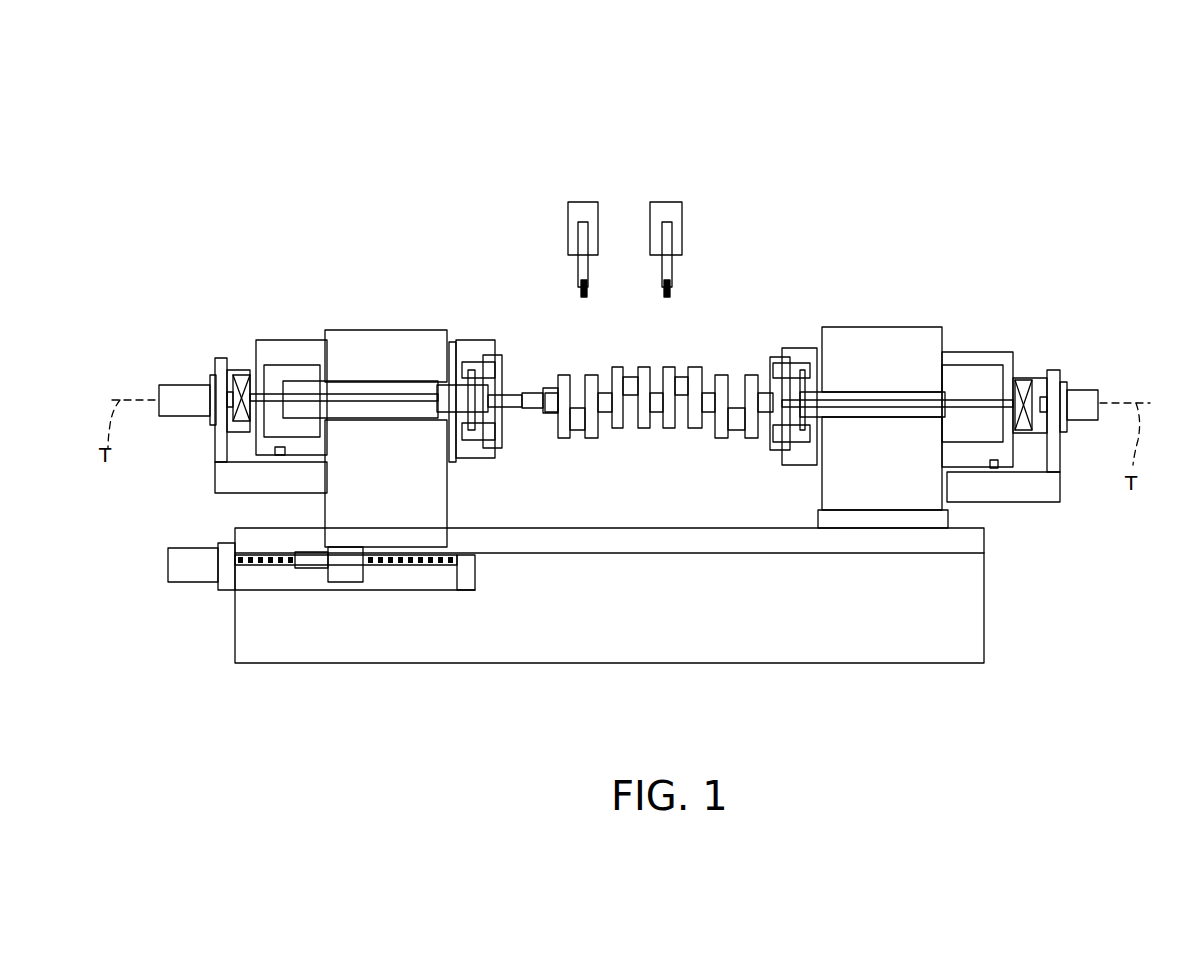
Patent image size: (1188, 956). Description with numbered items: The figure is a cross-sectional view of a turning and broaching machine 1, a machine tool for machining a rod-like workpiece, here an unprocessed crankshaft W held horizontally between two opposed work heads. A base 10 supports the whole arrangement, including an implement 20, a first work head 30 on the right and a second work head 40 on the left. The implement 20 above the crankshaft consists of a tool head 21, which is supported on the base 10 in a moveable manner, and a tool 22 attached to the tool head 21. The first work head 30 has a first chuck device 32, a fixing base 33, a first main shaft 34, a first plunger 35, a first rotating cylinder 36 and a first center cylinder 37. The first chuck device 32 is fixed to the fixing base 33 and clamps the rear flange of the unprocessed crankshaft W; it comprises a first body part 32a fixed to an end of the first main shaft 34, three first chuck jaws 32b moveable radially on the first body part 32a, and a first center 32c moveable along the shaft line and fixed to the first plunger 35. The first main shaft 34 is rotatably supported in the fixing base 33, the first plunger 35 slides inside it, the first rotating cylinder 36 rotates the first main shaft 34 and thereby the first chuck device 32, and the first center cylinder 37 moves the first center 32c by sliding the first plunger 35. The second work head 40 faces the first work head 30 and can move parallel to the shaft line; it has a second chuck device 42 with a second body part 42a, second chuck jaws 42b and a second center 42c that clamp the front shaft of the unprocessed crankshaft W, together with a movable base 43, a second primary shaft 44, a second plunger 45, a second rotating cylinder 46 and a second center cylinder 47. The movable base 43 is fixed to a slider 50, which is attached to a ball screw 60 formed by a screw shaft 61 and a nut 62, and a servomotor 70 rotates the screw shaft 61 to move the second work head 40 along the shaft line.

The turning and broaching machine 1 is at (530, 155).
The base 10 is at (984, 600).
The implement 20 is at (625, 213).
The tool head 21 is at (655, 237).
The tool 22 is at (660, 283).
The first work head 30 is at (1095, 213).
The first chuck device 32 is at (760, 345).
The first body part 32a is at (795, 348).
The first chuck jaws 32b is at (777, 348).
The first center 32c is at (812, 366).
The fixing base 33 is at (850, 327).
The first main shaft 34 is at (880, 392).
The first plunger 35 is at (920, 400).
The first rotating cylinder 36 is at (988, 352).
The first center cylinder 37 is at (1083, 390).
The second work head 40 is at (512, 213).
The second chuck device 42 is at (488, 345).
The second body part 42a is at (478, 338).
The second chuck jaws 42b is at (525, 358).
The second center 42c is at (433, 338).
The movable base 43 is at (403, 330).
The second primary shaft 44 is at (374, 381).
The second plunger 45 is at (340, 394).
The second rotating cylinder 46 is at (282, 340).
The second center cylinder 47 is at (186, 385).
The slider 50 is at (347, 582).
The ball screw 60 is at (355, 661).
The screw shaft 61 is at (262, 568).
The nut 62 is at (307, 568).
The servomotor 70 is at (182, 568).
The unprocessed crankshaft W is at (648, 367).